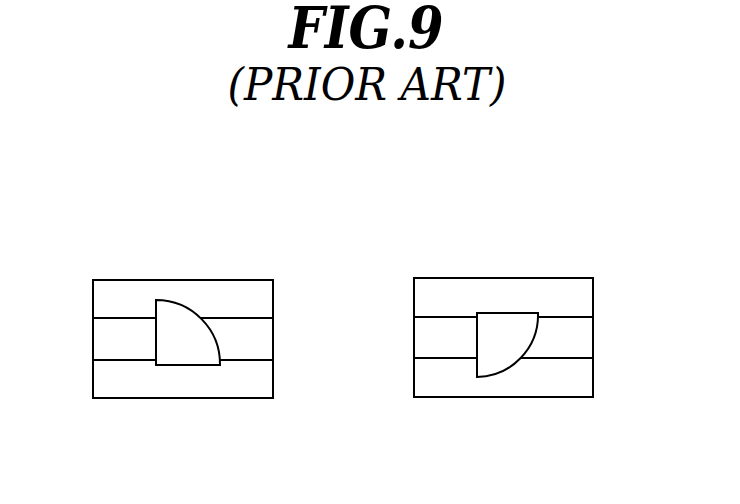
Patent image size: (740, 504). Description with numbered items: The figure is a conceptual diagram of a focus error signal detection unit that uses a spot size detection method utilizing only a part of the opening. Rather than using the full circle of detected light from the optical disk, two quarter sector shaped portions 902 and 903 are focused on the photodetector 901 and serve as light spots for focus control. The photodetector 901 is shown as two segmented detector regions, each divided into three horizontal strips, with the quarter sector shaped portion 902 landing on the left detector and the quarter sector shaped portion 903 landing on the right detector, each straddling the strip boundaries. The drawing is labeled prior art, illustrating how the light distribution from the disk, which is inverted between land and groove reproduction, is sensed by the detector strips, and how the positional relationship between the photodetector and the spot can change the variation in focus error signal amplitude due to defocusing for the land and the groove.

The photodetector 901 is at (256, 278).
The quarter sector shaped portion 902 is at (155, 345).
The quarter sector shaped portion 903 is at (533, 338).